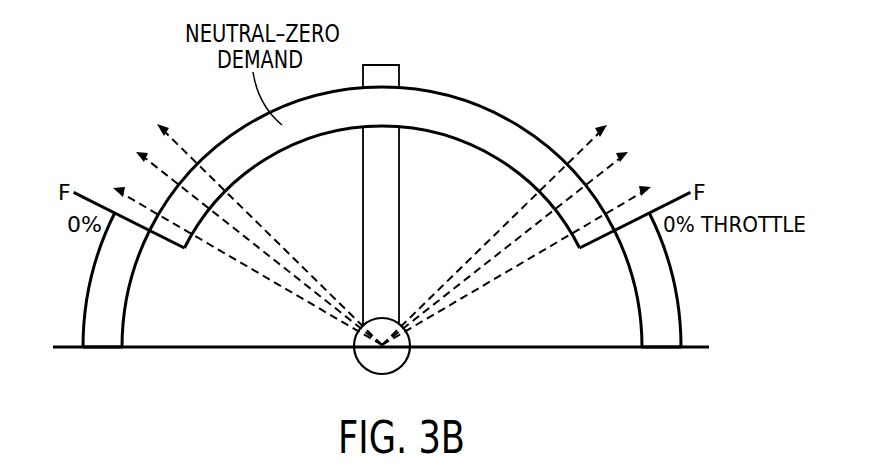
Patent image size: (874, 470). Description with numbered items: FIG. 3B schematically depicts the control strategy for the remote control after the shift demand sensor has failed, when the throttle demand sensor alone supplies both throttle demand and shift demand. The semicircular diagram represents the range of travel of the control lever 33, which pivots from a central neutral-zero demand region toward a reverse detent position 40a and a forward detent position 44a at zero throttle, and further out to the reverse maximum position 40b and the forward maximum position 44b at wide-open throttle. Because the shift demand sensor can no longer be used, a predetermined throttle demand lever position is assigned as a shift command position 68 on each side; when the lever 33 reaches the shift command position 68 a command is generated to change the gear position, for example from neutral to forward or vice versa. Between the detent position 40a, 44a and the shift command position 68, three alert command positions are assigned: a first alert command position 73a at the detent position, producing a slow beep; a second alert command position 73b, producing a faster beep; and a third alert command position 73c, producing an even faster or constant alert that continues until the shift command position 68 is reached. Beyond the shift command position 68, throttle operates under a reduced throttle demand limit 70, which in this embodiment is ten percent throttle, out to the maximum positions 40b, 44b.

The control lever 33 is at (380, 65).
The reverse detent position 40a is at (590, 133).
The reverse maximum position 40b is at (662, 350).
The forward detent position 44a is at (173, 137).
The forward maximum position 44b is at (103, 350).
The shift command position 68 is at (122, 230).
The reduced throttle demand limit 70 is at (40, 348).
The first alert command position 73a is at (188, 157).
The second alert command position 73b is at (165, 175).
The third alert command position 73c is at (143, 202).